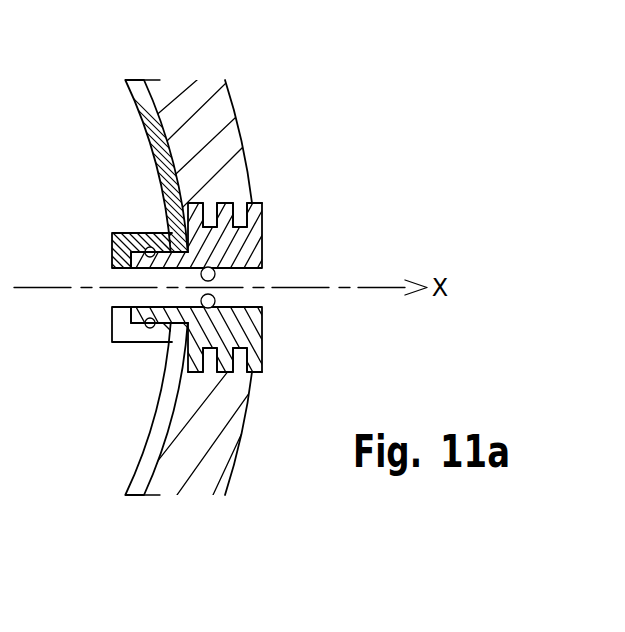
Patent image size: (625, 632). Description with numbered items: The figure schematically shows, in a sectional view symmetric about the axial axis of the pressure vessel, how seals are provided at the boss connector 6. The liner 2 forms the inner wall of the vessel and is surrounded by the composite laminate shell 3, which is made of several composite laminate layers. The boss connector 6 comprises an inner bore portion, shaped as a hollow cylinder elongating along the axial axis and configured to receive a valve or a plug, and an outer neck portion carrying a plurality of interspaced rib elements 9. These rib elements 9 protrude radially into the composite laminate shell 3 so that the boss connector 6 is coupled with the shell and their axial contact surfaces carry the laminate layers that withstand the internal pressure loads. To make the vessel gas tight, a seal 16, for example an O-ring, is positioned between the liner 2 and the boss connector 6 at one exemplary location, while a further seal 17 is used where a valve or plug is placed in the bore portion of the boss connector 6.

The liner 2 is at (141, 80).
The composite laminate shell 3 is at (188, 105).
The boss connector 6 is at (262, 247).
The rib elements 9 is at (200, 203).
The seal 16 is at (152, 233).
The further seal 17 is at (215, 302).